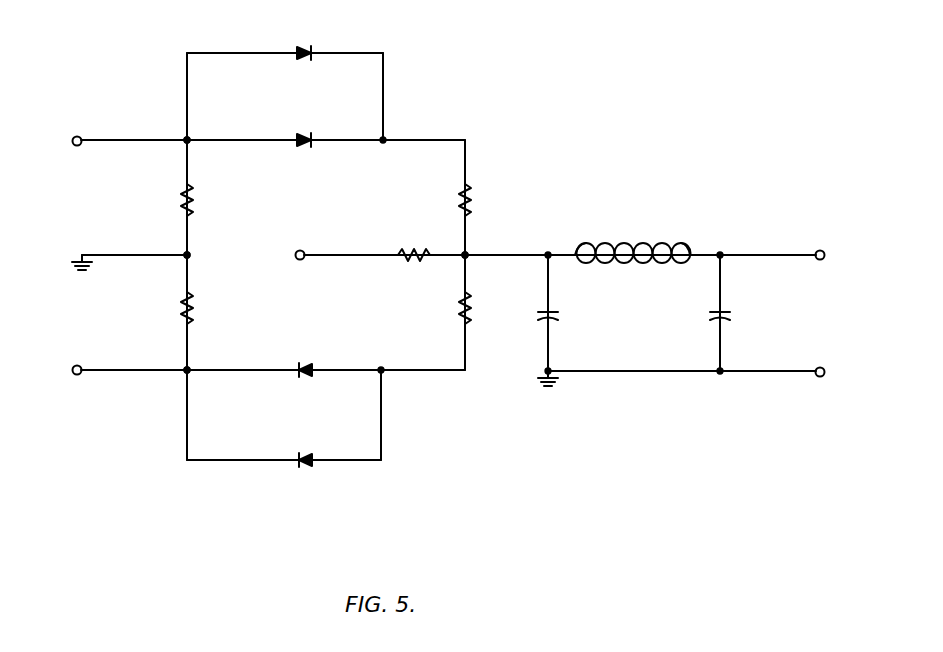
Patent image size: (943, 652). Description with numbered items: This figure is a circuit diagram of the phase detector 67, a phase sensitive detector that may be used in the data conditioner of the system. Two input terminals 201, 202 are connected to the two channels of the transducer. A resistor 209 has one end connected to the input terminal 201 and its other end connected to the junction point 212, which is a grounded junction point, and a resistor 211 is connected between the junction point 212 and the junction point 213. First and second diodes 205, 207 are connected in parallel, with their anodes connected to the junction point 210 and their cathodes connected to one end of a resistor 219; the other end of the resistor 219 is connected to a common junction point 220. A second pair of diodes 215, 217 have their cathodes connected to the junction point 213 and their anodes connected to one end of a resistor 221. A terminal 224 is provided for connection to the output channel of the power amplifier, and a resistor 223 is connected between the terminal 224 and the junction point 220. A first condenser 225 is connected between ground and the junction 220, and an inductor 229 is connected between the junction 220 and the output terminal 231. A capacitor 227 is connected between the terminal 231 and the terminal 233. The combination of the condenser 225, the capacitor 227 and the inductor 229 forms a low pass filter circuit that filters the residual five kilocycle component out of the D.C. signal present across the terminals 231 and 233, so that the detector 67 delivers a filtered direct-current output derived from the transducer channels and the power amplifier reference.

The phase detector 67 is at (448, 98).
The input terminal 201 is at (82, 137).
The input terminal 202 is at (78, 375).
The first diode 205 is at (313, 51).
The second diode 207 is at (313, 138).
The resistor 209 is at (194, 197).
The junction point 210 is at (189, 137).
The resistor 211 is at (193, 317).
The junction point 212 is at (189, 252).
The junction point 213 is at (189, 373).
The diode 215 is at (299, 367).
The diode 217 is at (299, 457).
The resistor 219 is at (471, 196).
The common junction point 220 is at (467, 252).
The resistor 221 is at (461, 305).
The resistor 223 is at (404, 250).
The terminal 224 is at (298, 260).
The first condenser 225 is at (558, 316).
The capacitor 227 is at (730, 316).
The inductor 229 is at (633, 246).
The output terminal 231 is at (818, 250).
The terminal 233 is at (818, 377).